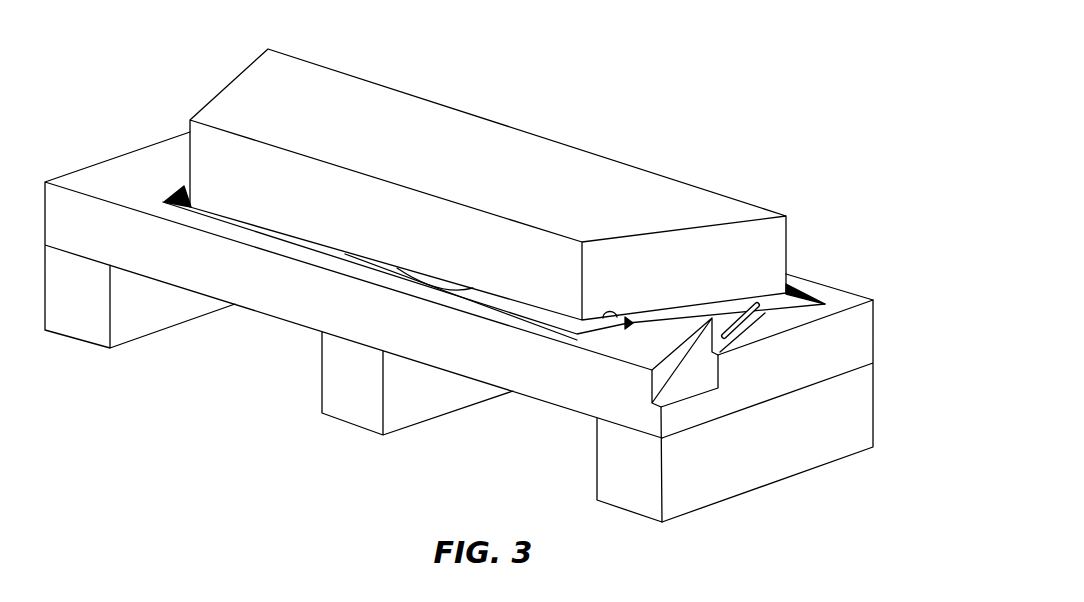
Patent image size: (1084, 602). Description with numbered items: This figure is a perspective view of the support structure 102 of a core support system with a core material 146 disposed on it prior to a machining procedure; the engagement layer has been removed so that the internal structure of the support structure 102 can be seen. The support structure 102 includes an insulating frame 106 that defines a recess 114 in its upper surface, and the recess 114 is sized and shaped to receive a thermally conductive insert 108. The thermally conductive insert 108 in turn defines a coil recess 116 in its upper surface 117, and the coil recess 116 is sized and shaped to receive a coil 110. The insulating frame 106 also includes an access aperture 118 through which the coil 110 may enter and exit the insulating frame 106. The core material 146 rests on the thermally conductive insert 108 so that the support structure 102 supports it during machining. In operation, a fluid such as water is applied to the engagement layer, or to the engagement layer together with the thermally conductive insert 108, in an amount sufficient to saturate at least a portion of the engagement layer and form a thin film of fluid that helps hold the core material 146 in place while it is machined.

The support structure 102 is at (889, 309).
The insulating frame 106 is at (847, 415).
The thermally conductive insert 108 is at (797, 298).
The coil 110 is at (759, 338).
The recess 114 is at (600, 318).
The coil recess 116 is at (474, 285).
The upper surface 117 is at (183, 187).
The access aperture 118 is at (699, 374).
The core material 146 is at (618, 190).